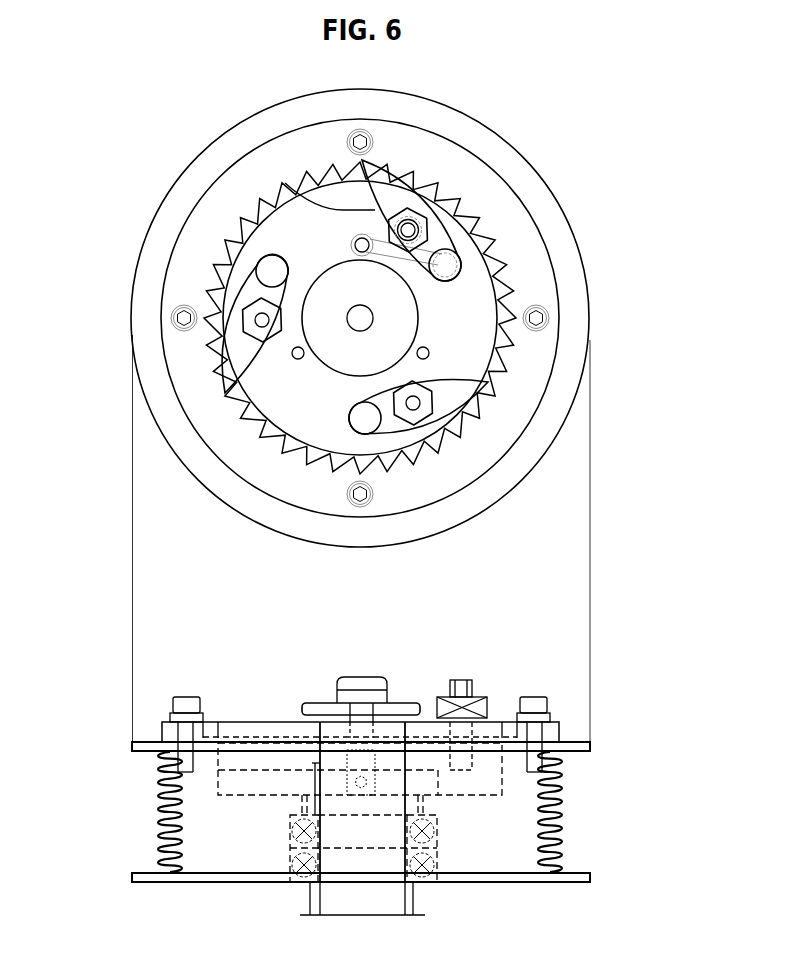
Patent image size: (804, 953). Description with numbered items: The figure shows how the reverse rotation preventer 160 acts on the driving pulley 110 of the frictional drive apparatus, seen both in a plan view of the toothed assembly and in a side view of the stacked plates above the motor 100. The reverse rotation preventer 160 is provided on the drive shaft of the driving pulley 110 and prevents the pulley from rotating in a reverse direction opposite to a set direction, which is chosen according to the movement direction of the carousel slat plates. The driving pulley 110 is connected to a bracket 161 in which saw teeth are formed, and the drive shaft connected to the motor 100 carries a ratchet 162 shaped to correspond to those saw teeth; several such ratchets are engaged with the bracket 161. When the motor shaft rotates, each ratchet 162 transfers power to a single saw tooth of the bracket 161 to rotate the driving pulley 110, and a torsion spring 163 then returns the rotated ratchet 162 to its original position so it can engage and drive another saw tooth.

The motor 100 is at (503, 786).
The driving pulley 110 is at (540, 183).
The reverse rotation preventer 160 is at (484, 338).
The bracket 161 is at (558, 262).
The ratchet 162 is at (377, 400).
The torsion spring 163 is at (433, 247).